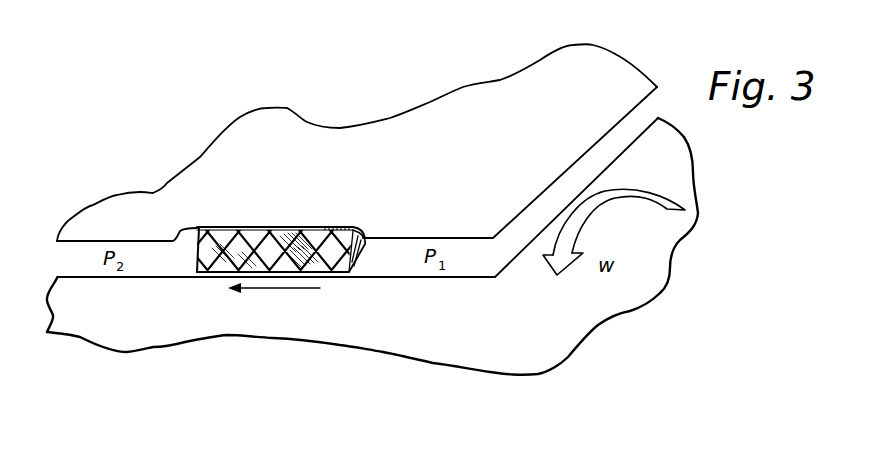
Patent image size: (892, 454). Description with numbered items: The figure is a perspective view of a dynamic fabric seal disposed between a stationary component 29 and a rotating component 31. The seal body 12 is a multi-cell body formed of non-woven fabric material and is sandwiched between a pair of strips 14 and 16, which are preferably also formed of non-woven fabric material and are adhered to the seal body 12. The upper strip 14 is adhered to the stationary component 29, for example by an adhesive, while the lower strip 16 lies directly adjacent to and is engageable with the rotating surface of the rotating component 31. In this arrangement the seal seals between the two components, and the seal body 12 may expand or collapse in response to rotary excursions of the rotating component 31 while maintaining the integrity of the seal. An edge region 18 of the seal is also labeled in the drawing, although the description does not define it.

The seal body 12 is at (261, 227).
The strip 14 is at (220, 228).
The strip 16 is at (207, 277).
The fabric edge 18 is at (210, 253).
The stationary component 29 is at (287, 108).
The rotating component 31 is at (453, 342).